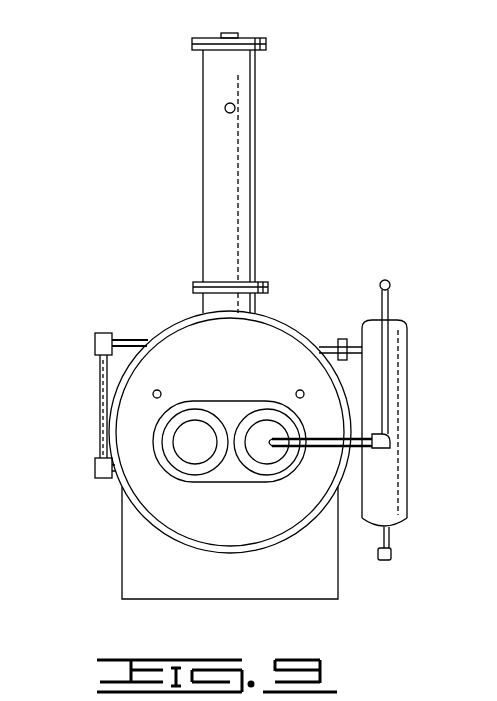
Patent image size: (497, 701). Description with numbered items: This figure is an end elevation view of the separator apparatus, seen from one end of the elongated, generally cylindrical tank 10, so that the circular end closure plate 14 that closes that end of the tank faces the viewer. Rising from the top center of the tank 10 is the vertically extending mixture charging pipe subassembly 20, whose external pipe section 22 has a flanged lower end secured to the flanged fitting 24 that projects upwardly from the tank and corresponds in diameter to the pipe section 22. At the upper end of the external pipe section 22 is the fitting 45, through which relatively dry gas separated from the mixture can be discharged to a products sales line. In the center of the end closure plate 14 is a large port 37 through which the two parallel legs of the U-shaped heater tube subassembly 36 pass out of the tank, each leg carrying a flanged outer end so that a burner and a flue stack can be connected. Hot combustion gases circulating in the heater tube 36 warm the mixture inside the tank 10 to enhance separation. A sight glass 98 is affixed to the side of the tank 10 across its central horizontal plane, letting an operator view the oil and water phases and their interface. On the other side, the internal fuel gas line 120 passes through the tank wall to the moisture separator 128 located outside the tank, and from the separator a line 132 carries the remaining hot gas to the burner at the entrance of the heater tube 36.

The tank 10 is at (305, 328).
The end closure plate 14 is at (247, 358).
The mixture charging pipe subassembly 20 is at (260, 175).
The external pipe section 22 is at (211, 149).
The flanged fitting 24 is at (213, 302).
The fitting 45 is at (232, 33).
The U-shaped heater tube subassembly 36 is at (228, 480).
The port 37 is at (215, 402).
The sight glass 98 is at (101, 386).
The internal fuel gas line 120 is at (326, 353).
The moisture separator 128 is at (400, 342).
The line 132 is at (389, 386).